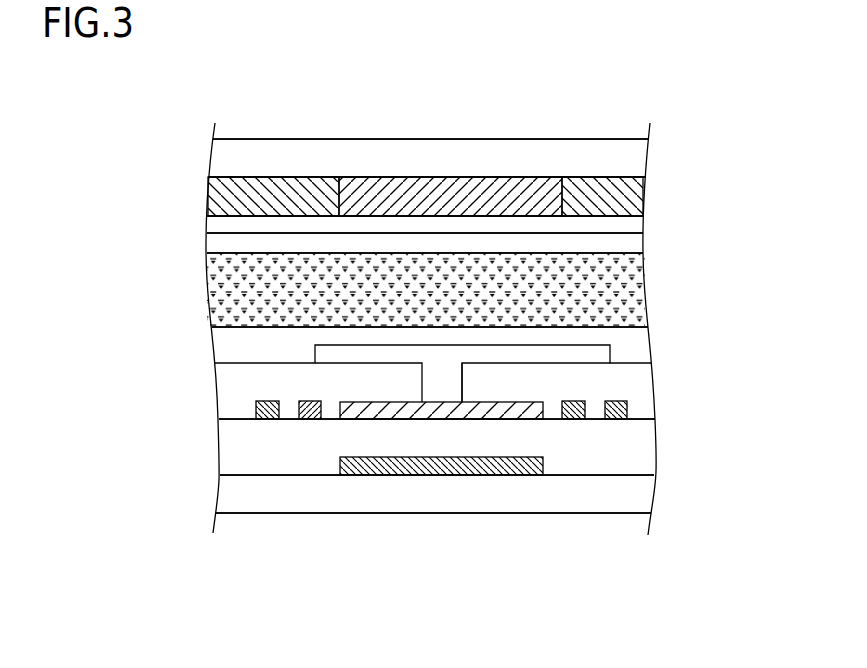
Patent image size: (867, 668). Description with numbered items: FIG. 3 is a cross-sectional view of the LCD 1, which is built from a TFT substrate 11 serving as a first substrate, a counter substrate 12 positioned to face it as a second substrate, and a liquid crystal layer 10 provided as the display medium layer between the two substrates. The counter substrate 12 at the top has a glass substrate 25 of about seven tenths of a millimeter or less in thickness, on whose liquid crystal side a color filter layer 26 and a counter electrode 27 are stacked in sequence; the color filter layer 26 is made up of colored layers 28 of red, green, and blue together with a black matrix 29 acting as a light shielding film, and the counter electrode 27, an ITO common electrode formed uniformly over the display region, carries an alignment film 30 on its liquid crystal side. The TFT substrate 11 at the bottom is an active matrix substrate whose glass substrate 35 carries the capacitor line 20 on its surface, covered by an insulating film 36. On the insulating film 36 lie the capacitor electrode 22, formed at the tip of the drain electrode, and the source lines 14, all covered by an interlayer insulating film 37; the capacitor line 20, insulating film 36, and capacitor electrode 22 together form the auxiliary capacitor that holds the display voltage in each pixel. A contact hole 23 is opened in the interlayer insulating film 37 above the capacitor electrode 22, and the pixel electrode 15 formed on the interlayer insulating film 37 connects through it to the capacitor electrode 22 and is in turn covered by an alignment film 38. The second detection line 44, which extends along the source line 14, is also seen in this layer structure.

The LCD 1 is at (130, 123).
The liquid crystal layer 10 is at (212, 283).
The TFT substrate 11 is at (233, 527).
The counter substrate 12 is at (248, 127).
The source line 14 is at (312, 419).
The pixel electrode 15 is at (617, 355).
The capacitor line 20 is at (520, 475).
The capacitor electrode 22 is at (372, 404).
The contact hole 23 is at (462, 380).
The glass substrate 25 is at (623, 152).
The color filter layer 26 is at (623, 197).
The counter electrode 27 is at (623, 223).
The colored layer 28 is at (467, 190).
The black matrix 29 is at (306, 188).
The alignment film 30 is at (635, 243).
The glass substrate 35 is at (637, 495).
The insulating film 36 is at (637, 449).
The interlayer insulating film 37 is at (637, 395).
The alignment film 38 is at (638, 338).
The second detection line 44 is at (267, 419).